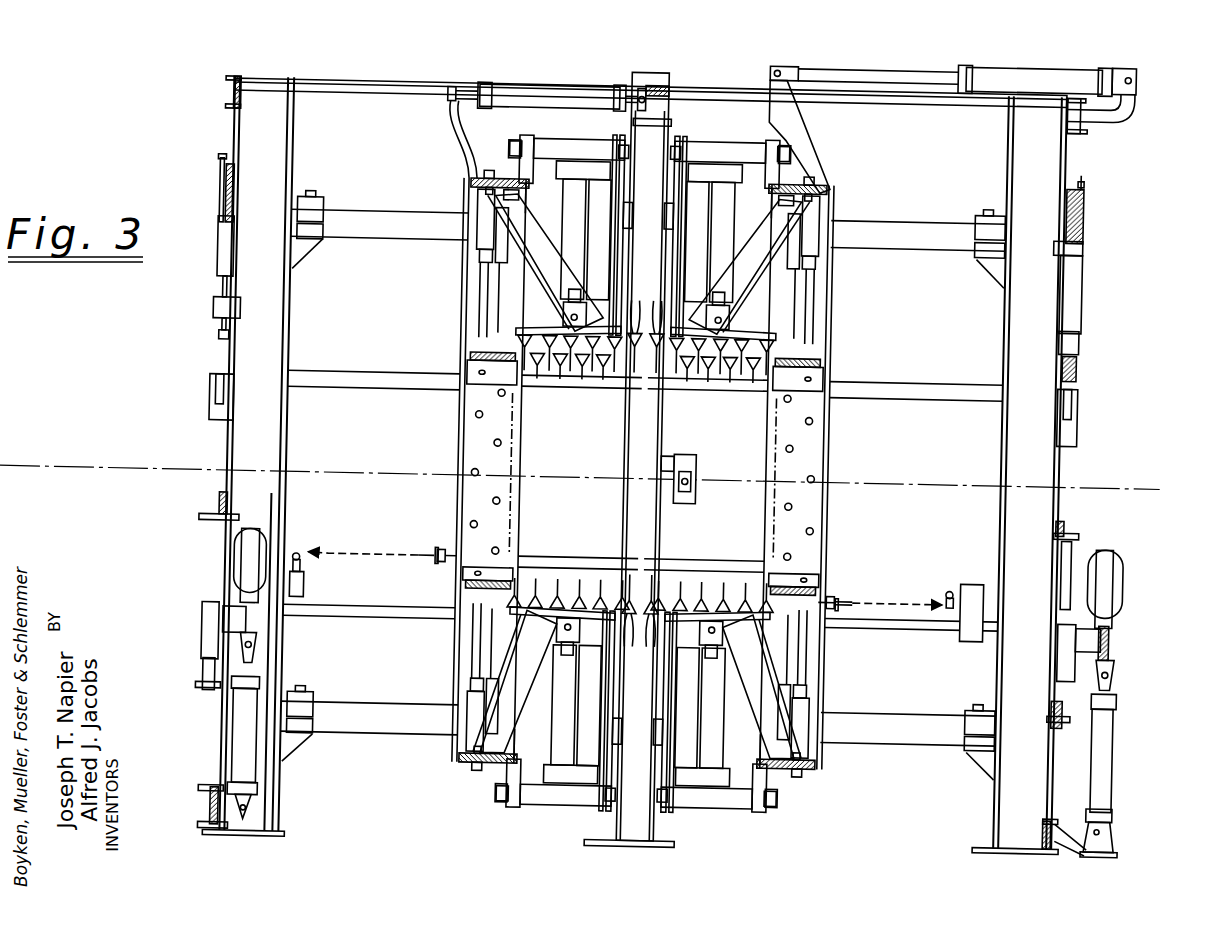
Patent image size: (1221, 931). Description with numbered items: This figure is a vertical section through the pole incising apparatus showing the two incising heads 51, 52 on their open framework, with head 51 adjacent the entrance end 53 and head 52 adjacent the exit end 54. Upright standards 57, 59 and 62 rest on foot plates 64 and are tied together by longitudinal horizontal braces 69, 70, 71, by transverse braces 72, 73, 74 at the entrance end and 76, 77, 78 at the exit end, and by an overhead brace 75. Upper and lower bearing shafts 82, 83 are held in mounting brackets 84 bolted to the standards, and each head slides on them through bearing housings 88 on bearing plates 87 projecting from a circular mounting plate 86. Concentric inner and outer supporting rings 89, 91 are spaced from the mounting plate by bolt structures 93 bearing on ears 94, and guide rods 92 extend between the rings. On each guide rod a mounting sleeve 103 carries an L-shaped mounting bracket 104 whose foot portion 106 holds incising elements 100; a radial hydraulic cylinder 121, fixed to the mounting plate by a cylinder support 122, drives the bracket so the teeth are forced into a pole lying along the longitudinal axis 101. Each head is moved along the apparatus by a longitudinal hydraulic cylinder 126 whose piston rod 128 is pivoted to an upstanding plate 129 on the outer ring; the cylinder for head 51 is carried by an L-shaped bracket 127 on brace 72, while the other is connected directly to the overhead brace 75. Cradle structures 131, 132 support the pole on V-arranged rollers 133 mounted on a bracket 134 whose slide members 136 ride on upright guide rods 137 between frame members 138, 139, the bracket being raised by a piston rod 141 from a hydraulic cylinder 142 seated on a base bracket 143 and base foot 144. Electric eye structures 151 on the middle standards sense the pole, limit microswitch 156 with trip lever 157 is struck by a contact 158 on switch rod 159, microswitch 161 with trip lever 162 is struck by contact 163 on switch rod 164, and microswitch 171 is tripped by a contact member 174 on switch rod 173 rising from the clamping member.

The incising head 51 is at (728, 828).
The incising head 52 is at (536, 821).
The entrance end 53 is at (1016, 479).
The exit end 54 is at (652, 461).
The upright standard 57 is at (276, 801).
The upright standard 59 is at (1011, 793).
The upright middle standard 62 is at (634, 830).
The foot plate 64 is at (281, 843).
The horizontal brace 69 is at (372, 90).
The horizontal brace 70 is at (924, 390).
The horizontal brace 71 is at (353, 379).
The transverse brace 72 is at (1066, 124).
The transverse brace 73 is at (1073, 187).
The transverse brace 74 is at (1062, 810).
The overhead brace 75 is at (645, 80).
The transverse brace 76 is at (218, 99).
The transverse brace 77 is at (218, 185).
The transverse brace 78 is at (216, 805).
The bearing shaft 82 is at (398, 219).
The bearing shaft 83 is at (364, 714).
The mounting bracket 84 is at (307, 210).
The mounting plate 86 is at (615, 185).
The bearing plate 87 is at (615, 200).
The bearing housing 88 is at (518, 167).
The inner supporting ring 89 is at (460, 375).
The outer supporting ring 91 is at (450, 188).
The guide rod 92 is at (465, 322).
The mounting bolt structure 93 is at (564, 151).
The ear 94 is at (780, 172).
The incising element 100 is at (580, 381).
The longitudinal axis 101 is at (1135, 478).
The mounting sleeve 103 is at (810, 244).
The mounting bracket 104 is at (512, 306).
The foot portion 106 is at (648, 330).
The hydraulic cylinder 121 is at (590, 190).
The cylinder support 122 is at (553, 781).
The hydraulic cylinder 126 is at (494, 94).
The L-shaped bracket 127 is at (1114, 96).
The piston rod 128 is at (848, 65).
The upstanding plate 129 is at (434, 123).
The cradle structure 131 is at (1153, 606).
The cradle structure 132 is at (252, 580).
The supporting roller 133 is at (1117, 568).
The supporting bracket 134 is at (1118, 636).
The cylindrical slide member 136 is at (208, 637).
The upright guide rod 137 is at (201, 252).
The frame member 138 is at (212, 302).
The frame member 139 is at (1066, 349).
The piston rod 141 is at (210, 412).
The hydraulic cylinder 142 is at (249, 731).
The base bracket 143 is at (1126, 831).
The base foot 144 is at (1107, 847).
The electric eye structure 151 is at (693, 474).
The limit microswitch 156 is at (974, 579).
The trip lever 157 is at (952, 588).
The contact 158 is at (834, 594).
The switch rod 159 is at (857, 600).
The limit microswitch 161 is at (307, 590).
The trip lever 162 is at (302, 565).
The contact 163 is at (441, 548).
The switch rod 164 is at (439, 551).
The limit microswitch 171 is at (228, 261).
The switch rod 173 is at (213, 168).
The contact member 174 is at (213, 347).